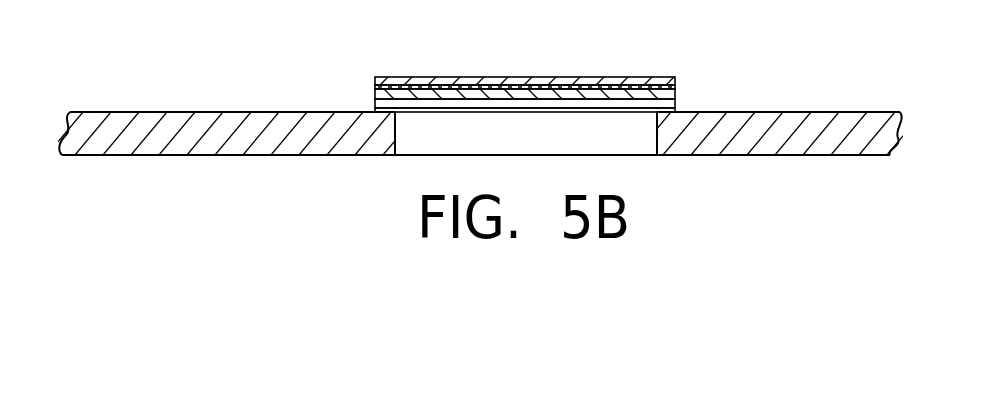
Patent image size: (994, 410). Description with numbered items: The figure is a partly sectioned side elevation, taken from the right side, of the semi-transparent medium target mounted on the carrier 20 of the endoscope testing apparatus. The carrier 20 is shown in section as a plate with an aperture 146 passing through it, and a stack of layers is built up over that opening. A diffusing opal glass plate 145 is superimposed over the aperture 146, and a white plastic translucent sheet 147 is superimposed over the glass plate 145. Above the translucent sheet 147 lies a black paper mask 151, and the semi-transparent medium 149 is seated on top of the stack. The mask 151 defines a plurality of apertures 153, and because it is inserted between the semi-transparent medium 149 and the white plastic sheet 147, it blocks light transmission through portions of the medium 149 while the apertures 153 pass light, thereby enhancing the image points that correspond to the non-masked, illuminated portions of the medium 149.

The carrier 20 is at (825, 112).
The diffusing opal glass plate 145 is at (677, 107).
The aperture 146 is at (657, 133).
The white plastic translucent sheet 147 is at (677, 90).
The semi-transparent medium 149 is at (597, 77).
The black paper mask 151 is at (675, 78).
The apertures 153 is at (506, 77).